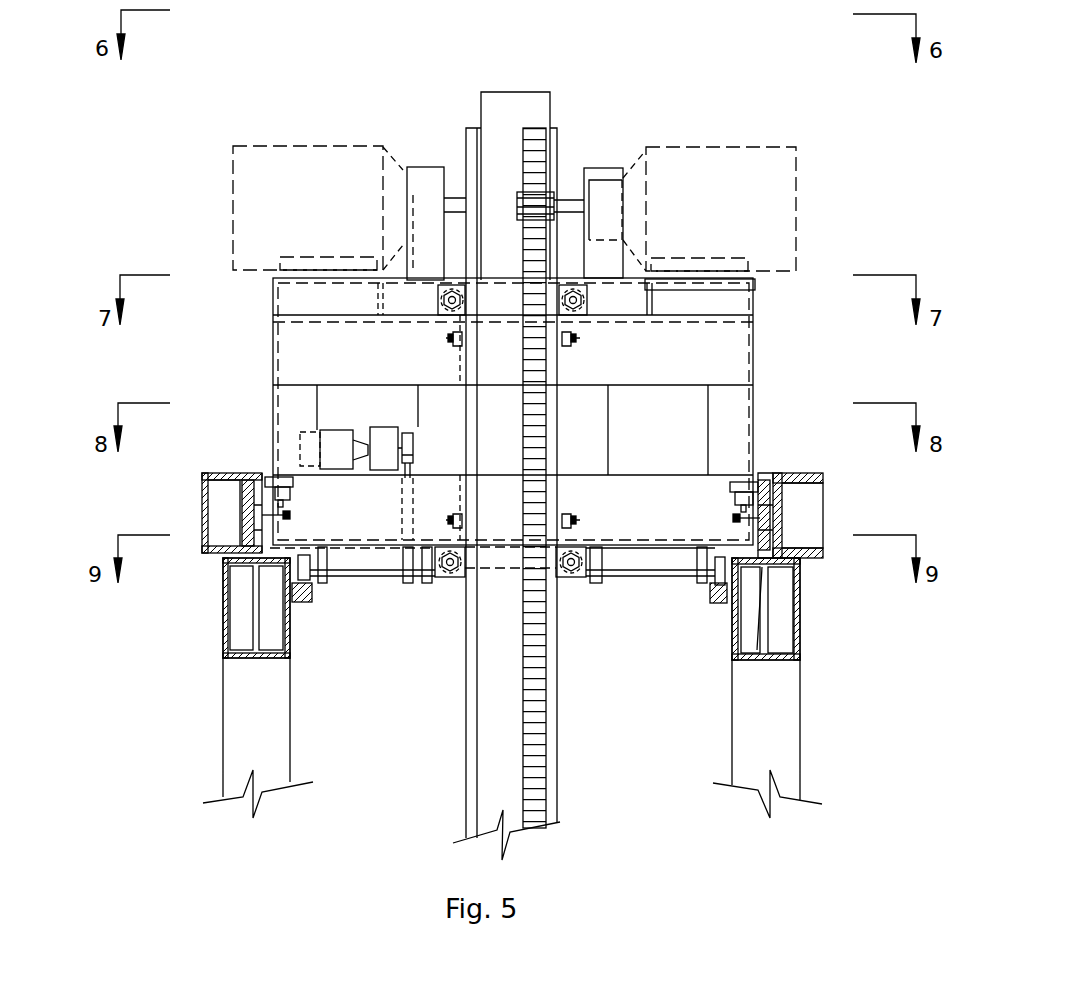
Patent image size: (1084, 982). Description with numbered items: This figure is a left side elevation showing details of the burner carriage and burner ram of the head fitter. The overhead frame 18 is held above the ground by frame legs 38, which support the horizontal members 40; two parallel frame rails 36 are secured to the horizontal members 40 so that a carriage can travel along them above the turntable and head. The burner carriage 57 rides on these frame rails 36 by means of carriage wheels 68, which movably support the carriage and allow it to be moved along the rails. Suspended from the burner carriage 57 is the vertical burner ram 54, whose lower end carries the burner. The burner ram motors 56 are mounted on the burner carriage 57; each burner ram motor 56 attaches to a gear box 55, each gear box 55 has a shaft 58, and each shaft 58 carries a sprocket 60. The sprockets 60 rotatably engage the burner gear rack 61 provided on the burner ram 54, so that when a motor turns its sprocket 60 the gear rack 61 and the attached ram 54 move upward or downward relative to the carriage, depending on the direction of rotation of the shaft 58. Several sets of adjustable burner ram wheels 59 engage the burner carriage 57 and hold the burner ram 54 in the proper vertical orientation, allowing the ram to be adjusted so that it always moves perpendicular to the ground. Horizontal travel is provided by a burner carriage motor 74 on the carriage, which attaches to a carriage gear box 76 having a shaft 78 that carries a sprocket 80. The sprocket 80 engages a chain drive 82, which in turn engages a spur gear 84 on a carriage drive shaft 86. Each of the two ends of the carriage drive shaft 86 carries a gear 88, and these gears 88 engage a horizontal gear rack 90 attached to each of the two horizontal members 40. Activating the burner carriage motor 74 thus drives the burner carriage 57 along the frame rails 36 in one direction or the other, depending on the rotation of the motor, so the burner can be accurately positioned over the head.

The overhead frame 18 is at (240, 555).
The frame rails 36 is at (255, 475).
The frame legs 38 is at (222, 735).
The horizontal members 40 is at (222, 625).
The burner ram 54 is at (519, 105).
The gear box 55 is at (418, 165).
The burner ram motors 56 is at (306, 145).
The burner carriage 57 is at (752, 392).
The shaft 58 is at (449, 195).
The adjustable burner ram wheels 59 is at (435, 305).
The sprocket 60 is at (517, 205).
The burner gear rack 61 is at (546, 675).
The carriage wheels 68 is at (282, 477).
The burner carriage motor 74 is at (317, 425).
The carriage gear box 76 is at (384, 425).
The shaft 78 is at (403, 480).
The sprocket 80 is at (408, 432).
The chain drive 82 is at (402, 512).
The spur gear 84 is at (410, 585).
The carriage drive shaft 86 is at (610, 585).
The gears 88 is at (312, 582).
The horizontal gear rack 90 is at (303, 605).